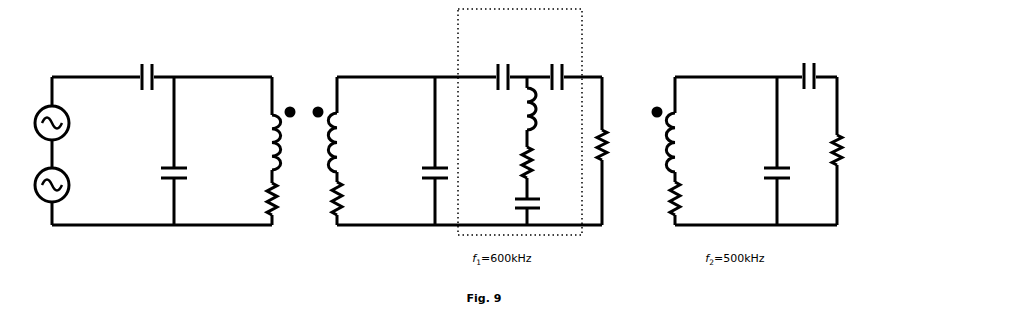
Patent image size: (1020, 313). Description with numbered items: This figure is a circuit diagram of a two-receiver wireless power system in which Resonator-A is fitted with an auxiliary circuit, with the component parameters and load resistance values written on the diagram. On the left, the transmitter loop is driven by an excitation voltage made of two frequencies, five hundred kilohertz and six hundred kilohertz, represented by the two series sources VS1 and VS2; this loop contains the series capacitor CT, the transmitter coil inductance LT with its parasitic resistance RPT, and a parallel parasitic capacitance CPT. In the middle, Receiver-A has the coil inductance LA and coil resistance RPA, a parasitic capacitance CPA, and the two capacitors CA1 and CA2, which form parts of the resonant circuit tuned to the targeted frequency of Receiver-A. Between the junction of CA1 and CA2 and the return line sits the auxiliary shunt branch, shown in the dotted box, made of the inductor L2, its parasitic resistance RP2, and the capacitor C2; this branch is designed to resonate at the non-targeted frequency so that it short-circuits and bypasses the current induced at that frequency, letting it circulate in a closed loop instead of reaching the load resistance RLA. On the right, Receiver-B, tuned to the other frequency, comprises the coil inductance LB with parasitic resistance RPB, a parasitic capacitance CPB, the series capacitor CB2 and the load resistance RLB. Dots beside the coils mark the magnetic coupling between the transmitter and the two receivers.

The series capacitor C_T 1nF CT is at (147, 55).
The voltage source V_S1 f1=600kHz VS1 is at (92, 124).
The voltage source V_S2 f2=500kHz VS2 is at (91, 186).
The parasitic capacitor C_PT 17pF CPT is at (190, 173).
The transmitter inductor L_T 81.3uH LT is at (249, 142).
The parasitic resistor R_PT 0.85 ohm RPT is at (250, 199).
The coil inductance LA is at (357, 142).
The coil resistance RPA is at (357, 198).
The parasitic capacitor C_PA 17pF CPA is at (418, 174).
The capacitor CA2 is at (501, 55).
The capacitor CA1 is at (556, 55).
The inductor of resonant branch L2 is at (502, 110).
The parasitic resistor R_P2 3 ohm RP2 is at (507, 163).
The capacitor of resonant branch C2 is at (504, 204).
The load resistance RLA is at (619, 149).
The capacitor C_B2 1.22nF CB2 is at (810, 56).
The receiver inductor L_B 81.3uH LB is at (696, 142).
The parasitic resistor R_PB 0.85 ohm RPB is at (696, 198).
The parasitic capacitor C_PB 17pF CPB is at (760, 174).
The load resistor R_LB 4.7 ohm RLB is at (856, 151).